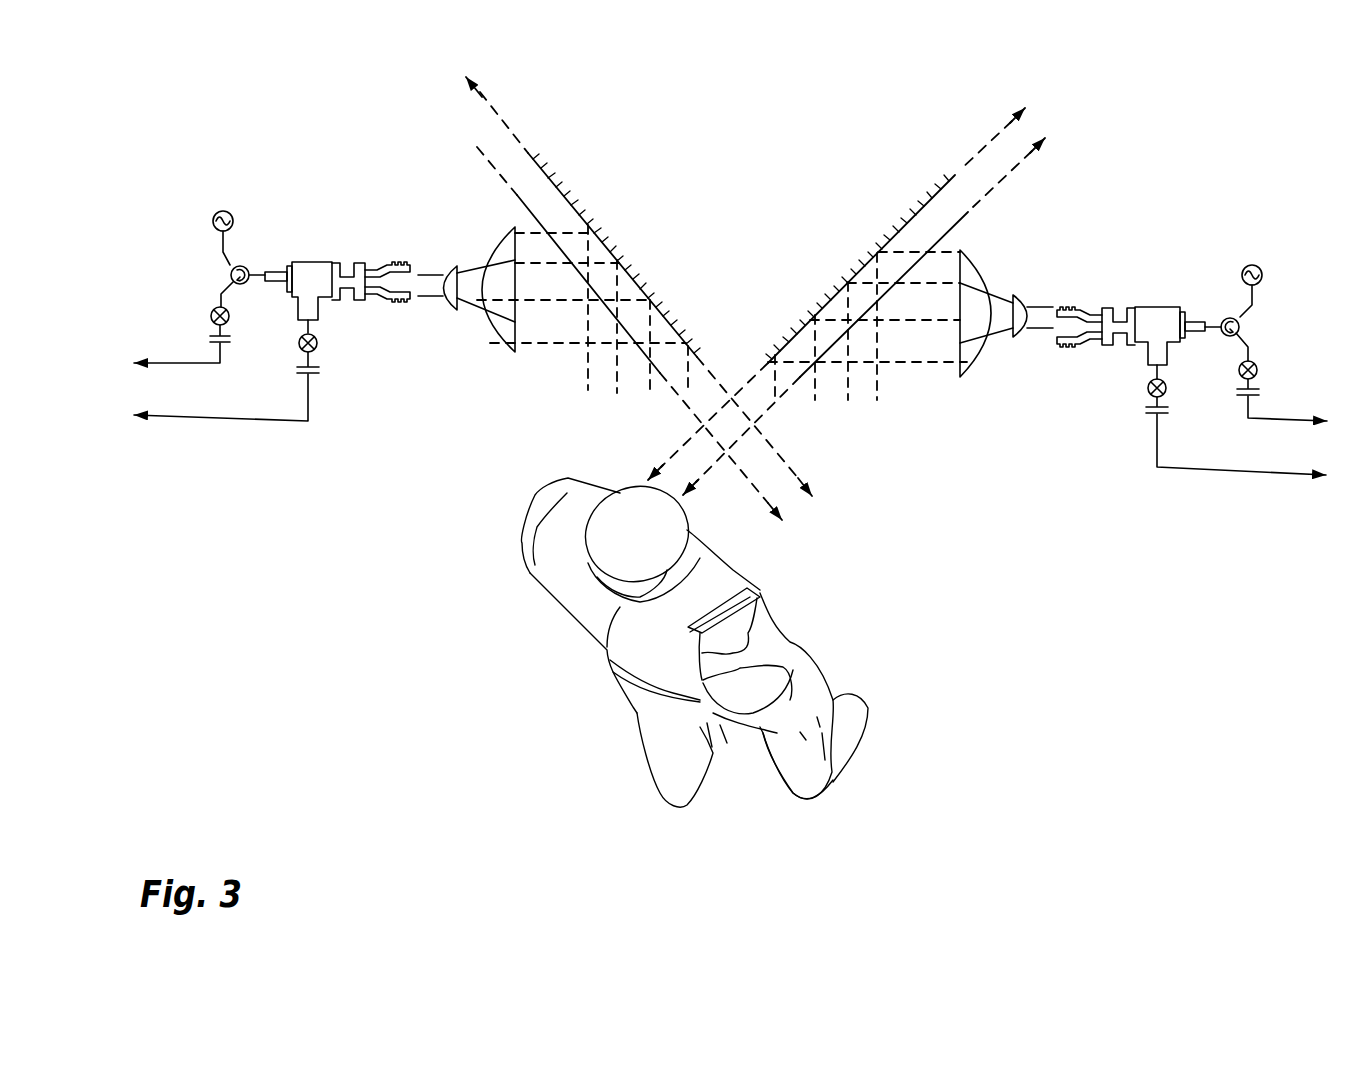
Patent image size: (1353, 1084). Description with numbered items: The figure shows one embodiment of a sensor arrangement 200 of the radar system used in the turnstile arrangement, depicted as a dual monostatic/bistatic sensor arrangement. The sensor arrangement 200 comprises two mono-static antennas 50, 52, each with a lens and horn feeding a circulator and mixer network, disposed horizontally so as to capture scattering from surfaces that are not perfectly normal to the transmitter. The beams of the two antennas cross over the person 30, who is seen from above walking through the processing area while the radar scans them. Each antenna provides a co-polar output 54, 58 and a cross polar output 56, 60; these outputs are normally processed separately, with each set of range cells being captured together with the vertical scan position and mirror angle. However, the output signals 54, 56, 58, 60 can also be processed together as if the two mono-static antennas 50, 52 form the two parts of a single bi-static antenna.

The person 30 is at (795, 735).
The mono-static antenna 50 is at (460, 195).
The mono-static antenna 52 is at (1020, 255).
The co-polar output 54 is at (168, 357).
The cross polar output 56 is at (197, 422).
The co-polar output 58 is at (1255, 440).
The cross polar output 60 is at (1150, 468).
The sensor arrangement 200 is at (540, 440).